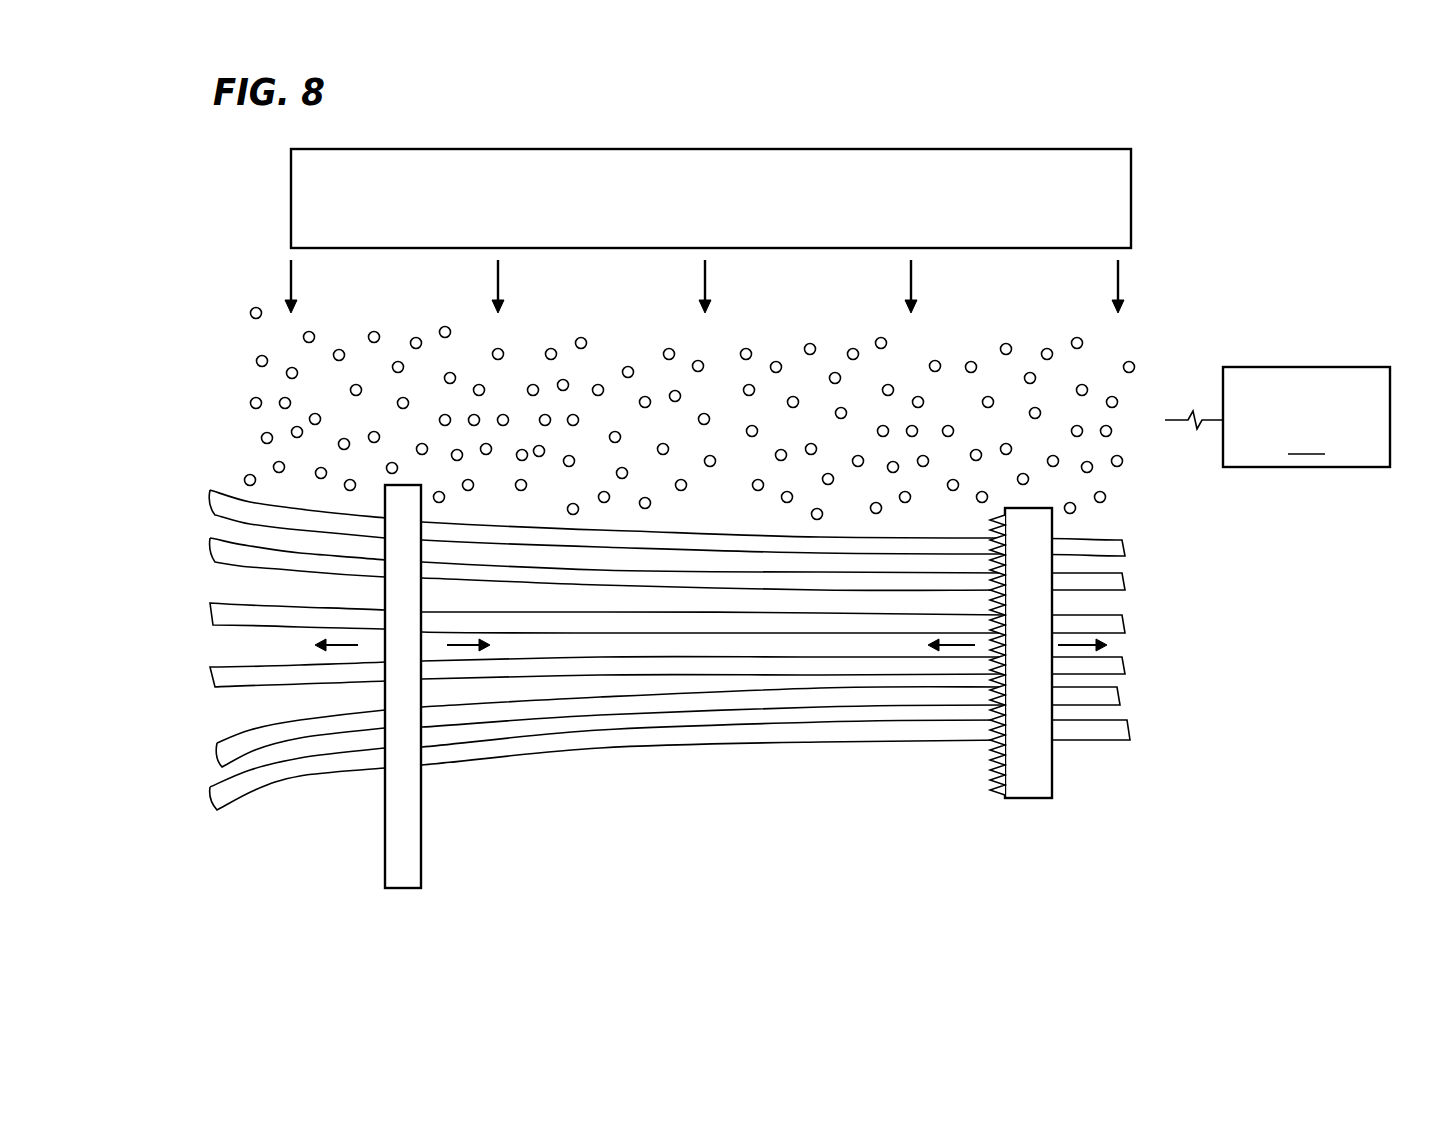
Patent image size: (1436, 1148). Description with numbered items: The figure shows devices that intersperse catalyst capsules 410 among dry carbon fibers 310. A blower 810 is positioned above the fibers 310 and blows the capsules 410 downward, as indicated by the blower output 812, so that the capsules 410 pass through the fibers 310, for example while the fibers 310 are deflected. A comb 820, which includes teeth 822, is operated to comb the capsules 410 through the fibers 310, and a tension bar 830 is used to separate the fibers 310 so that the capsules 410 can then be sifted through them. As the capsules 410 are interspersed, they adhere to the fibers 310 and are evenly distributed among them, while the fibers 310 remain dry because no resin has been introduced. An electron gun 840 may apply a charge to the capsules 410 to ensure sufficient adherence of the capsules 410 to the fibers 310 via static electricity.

The fibers 310 is at (1122, 540).
The catalyst capsules 410 is at (256, 361).
The blower 810 is at (590, 148).
The air flow 812 is at (291, 302).
The comb 820 is at (1037, 798).
The teeth 822 is at (997, 798).
The tension bar 830 is at (400, 888).
The electron gun 840 is at (1277, 417).